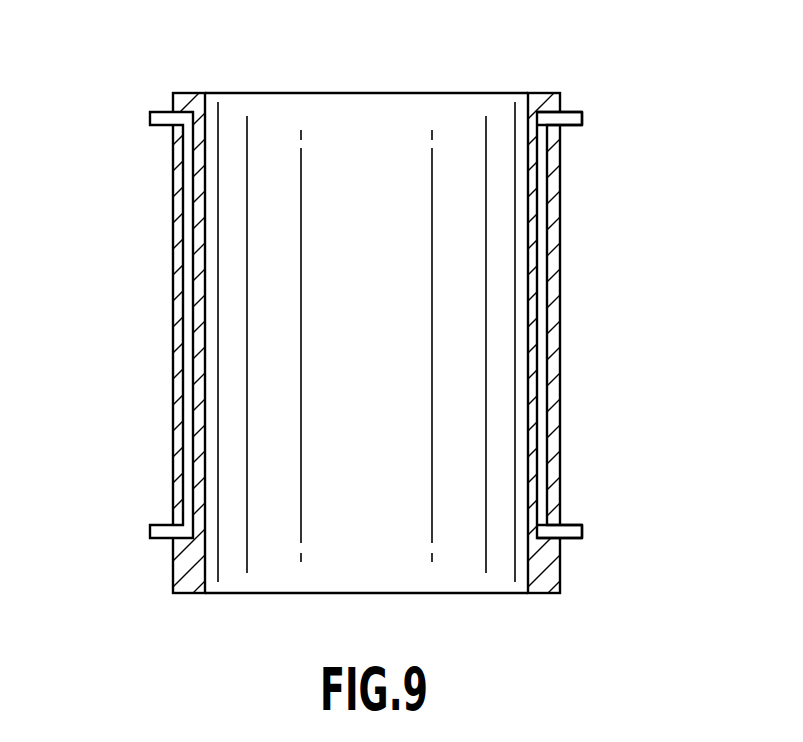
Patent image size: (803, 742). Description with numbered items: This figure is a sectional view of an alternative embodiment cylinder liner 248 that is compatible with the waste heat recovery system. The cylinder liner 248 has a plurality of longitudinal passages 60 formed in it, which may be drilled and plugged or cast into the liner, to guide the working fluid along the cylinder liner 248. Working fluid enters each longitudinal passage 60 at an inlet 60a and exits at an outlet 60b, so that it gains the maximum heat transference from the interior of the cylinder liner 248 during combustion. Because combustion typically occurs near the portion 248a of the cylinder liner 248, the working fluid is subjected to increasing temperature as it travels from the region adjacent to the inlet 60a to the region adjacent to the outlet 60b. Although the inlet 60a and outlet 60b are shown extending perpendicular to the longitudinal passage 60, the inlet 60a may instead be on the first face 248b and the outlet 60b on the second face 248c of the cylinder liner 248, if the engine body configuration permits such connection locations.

The cylinder liner 248 is at (362, 347).
The portion of cylinder liner 248a is at (430, 103).
The first face of cylinder liner 248b is at (542, 593).
The second face of cylinder liner 248c is at (188, 93).
The longitudinal passage 60 is at (188, 410).
The inlet 60a is at (583, 532).
The outlet 60b is at (583, 118).